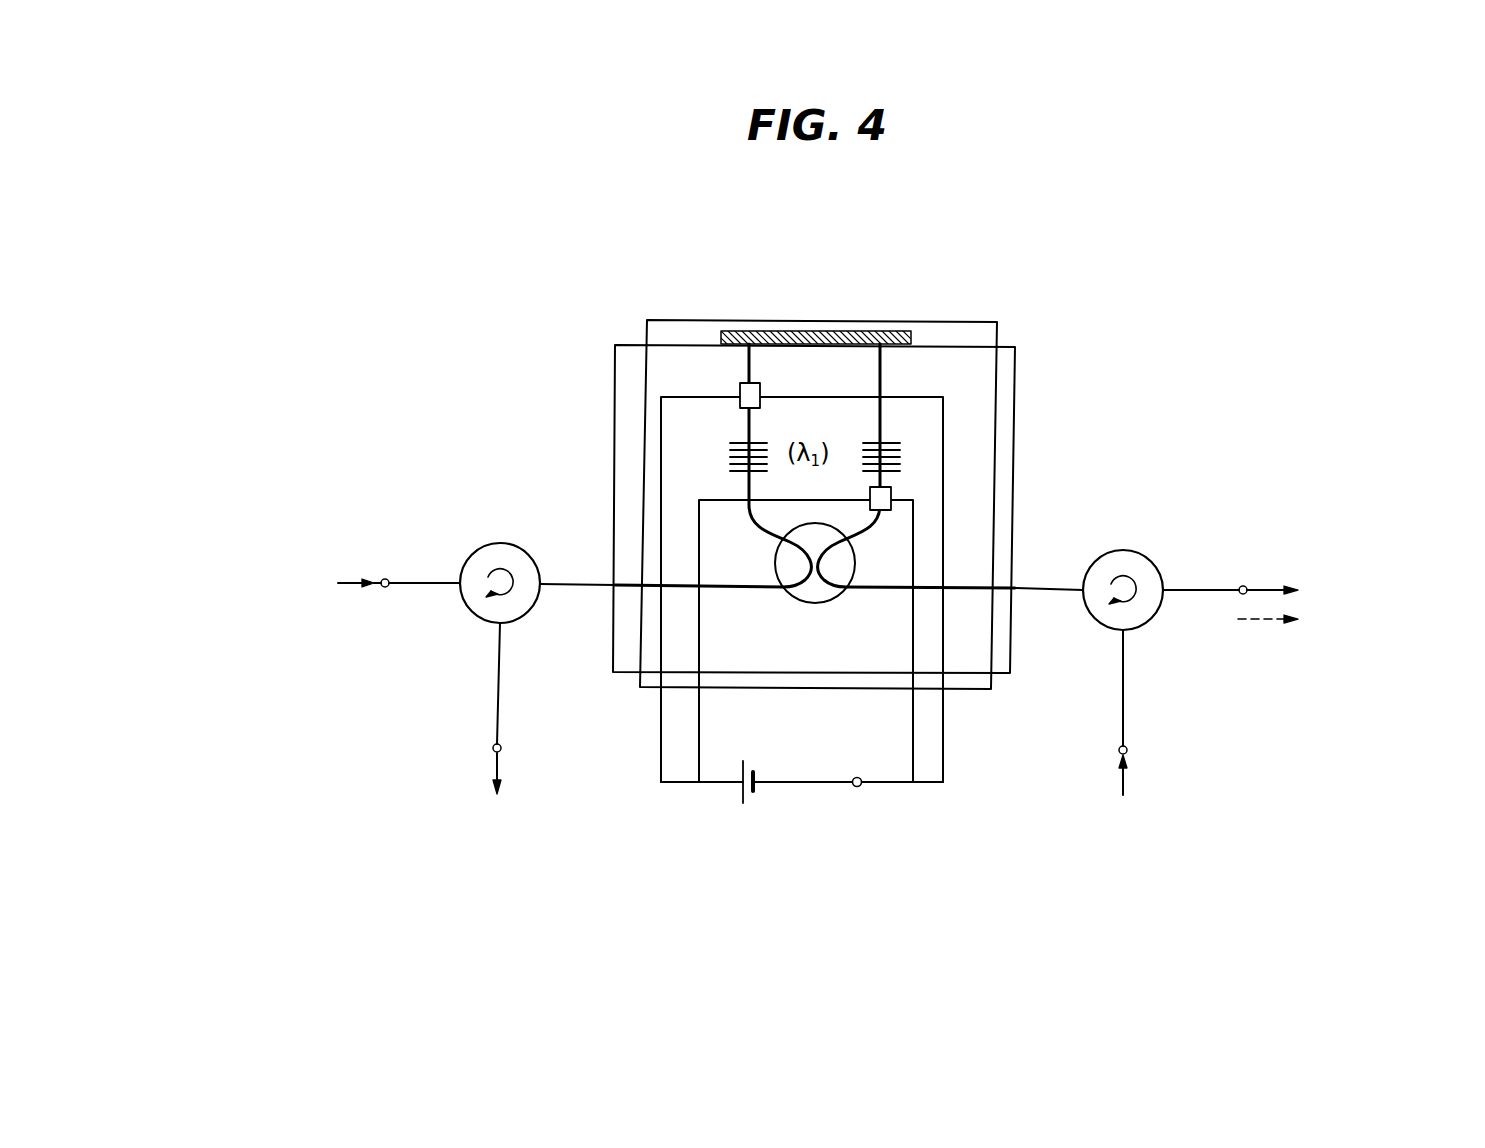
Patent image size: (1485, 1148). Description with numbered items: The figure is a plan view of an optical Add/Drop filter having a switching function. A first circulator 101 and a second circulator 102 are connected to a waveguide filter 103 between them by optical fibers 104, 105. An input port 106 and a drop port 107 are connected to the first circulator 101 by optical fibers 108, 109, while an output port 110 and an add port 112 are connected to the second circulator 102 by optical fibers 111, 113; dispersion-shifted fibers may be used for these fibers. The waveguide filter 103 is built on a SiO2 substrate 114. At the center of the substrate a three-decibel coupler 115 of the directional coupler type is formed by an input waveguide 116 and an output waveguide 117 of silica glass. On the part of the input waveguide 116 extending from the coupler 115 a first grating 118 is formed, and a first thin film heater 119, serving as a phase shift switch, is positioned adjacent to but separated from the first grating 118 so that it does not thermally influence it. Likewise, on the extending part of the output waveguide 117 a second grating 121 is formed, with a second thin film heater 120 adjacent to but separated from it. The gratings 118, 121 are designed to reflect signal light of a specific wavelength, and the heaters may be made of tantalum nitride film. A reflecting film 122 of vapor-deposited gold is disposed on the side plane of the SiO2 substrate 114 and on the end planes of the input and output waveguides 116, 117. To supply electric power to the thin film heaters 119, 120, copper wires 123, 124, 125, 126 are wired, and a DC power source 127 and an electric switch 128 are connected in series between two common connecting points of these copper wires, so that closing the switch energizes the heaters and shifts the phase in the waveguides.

The first circulator 101 is at (497, 543).
The second circulator 102 is at (1122, 550).
The waveguide filter 103 is at (980, 322).
The optical fiber 104 is at (575, 584).
The optical fiber 105 is at (1037, 589).
The input port 106 is at (380, 578).
The drop port 107 is at (492, 749).
The optical fiber 108 is at (433, 583).
The optical fiber 109 is at (498, 692).
The output port 110 is at (1243, 586).
The optical fiber 111 is at (1183, 590).
The add port 112 is at (1128, 750).
The optical fiber 113 is at (1125, 683).
The SiO2 substrate 114 is at (1015, 367).
The 3 dB coupler 115 is at (815, 603).
The input waveguide 116 is at (683, 587).
The output waveguide 117 is at (930, 590).
The first grating 118 is at (728, 457).
The first thin film heater 119 is at (740, 385).
The second thin film heater 120 is at (893, 490).
The second grating 121 is at (907, 450).
The reflecting film 122 is at (833, 331).
The copper wire 123 is at (660, 720).
The copper wire 124 is at (947, 765).
The copper wire 125 is at (697, 747).
The copper wire 126 is at (912, 732).
The DC power source 127 is at (757, 790).
The electric switch 128 is at (850, 787).